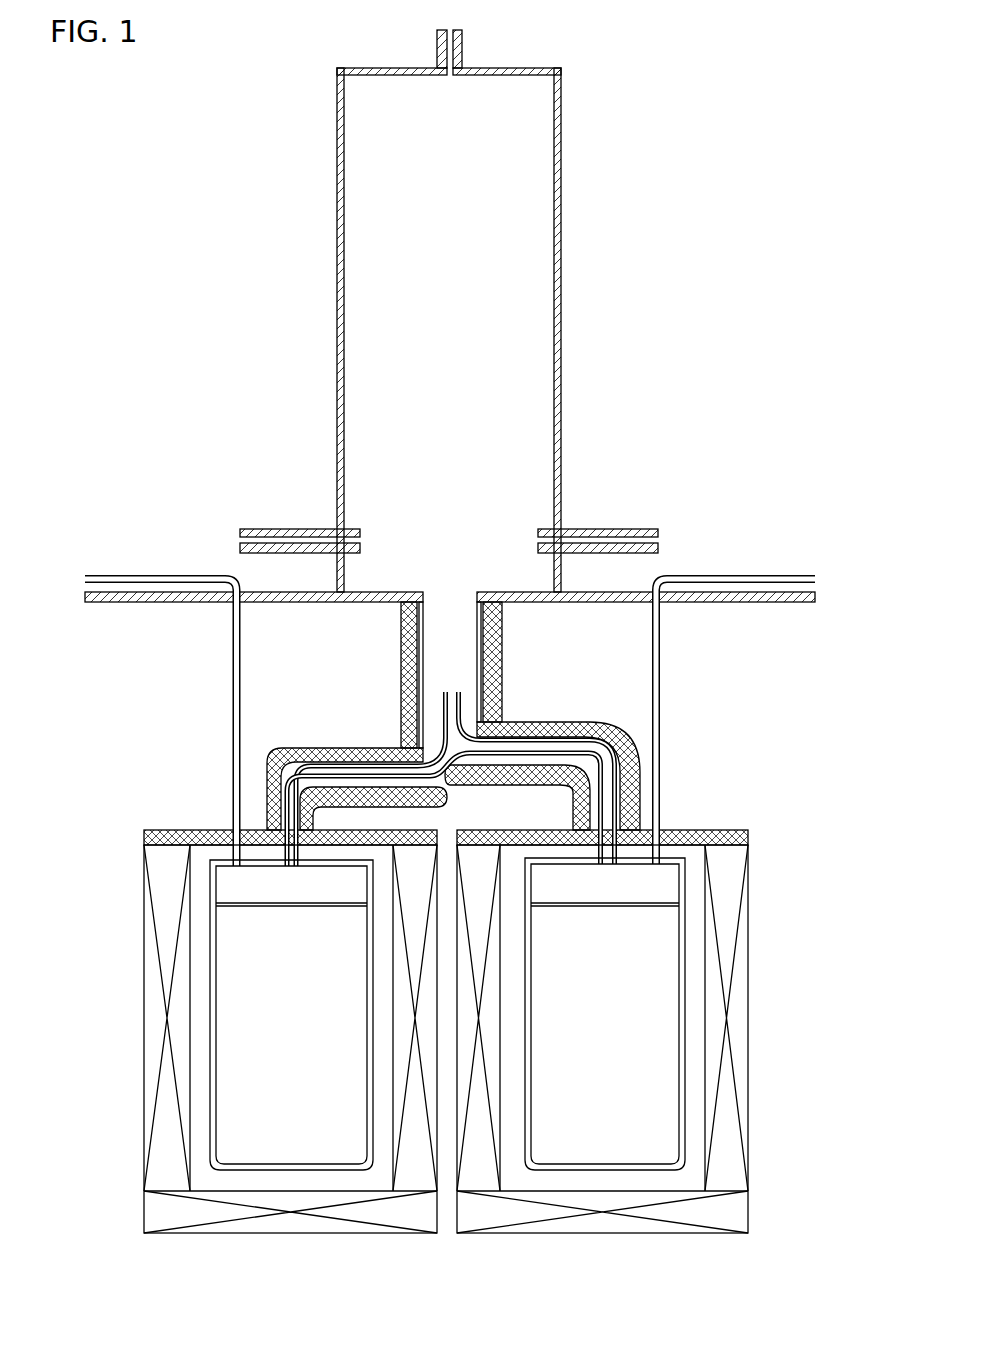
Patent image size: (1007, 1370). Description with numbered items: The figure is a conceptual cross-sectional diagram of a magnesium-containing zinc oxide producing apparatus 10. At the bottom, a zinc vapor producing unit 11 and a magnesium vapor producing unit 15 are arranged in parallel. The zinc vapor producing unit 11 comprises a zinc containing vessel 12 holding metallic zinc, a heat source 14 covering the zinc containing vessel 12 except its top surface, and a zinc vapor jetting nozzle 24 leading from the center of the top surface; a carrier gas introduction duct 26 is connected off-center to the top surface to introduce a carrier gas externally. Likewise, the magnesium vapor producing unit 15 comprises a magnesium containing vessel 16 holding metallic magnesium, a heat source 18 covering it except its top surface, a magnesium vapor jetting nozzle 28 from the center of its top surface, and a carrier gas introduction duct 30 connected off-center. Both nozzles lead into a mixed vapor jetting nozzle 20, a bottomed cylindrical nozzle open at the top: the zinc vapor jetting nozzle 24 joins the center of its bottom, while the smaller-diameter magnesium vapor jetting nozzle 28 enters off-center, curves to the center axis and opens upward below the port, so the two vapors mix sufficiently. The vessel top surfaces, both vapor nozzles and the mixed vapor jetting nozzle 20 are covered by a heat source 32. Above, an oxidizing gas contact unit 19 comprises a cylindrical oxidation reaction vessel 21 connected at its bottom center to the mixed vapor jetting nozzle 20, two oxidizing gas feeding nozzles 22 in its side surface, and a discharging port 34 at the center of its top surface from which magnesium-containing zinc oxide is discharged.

The magnesium-containing zinc oxide producing apparatus 10 is at (685, 92).
The zinc vapor producing unit 11 is at (295, 1237).
The zinc containing vessel 12 is at (210, 1003).
The heat source 14 is at (144, 1084).
The magnesium vapor producing unit 15 is at (607, 1237).
The magnesium containing vessel 16 is at (685, 990).
The heat source 18 is at (748, 1094).
The oxidizing gas contact unit 19 is at (633, 350).
The mixed vapor jetting nozzle 20 is at (482, 640).
The oxidation reaction vessel 21 is at (563, 181).
The oxidizing gas feeding nozzles 22 is at (290, 527).
The zinc vapor jetting nozzle 24 is at (342, 747).
The carrier gas introduction duct 26 is at (121, 574).
The magnesium vapor jetting nozzle 28 is at (556, 721).
The carrier gas introduction duct 30 is at (750, 574).
The heat source 32 is at (178, 829).
The discharging port 34 is at (463, 43).